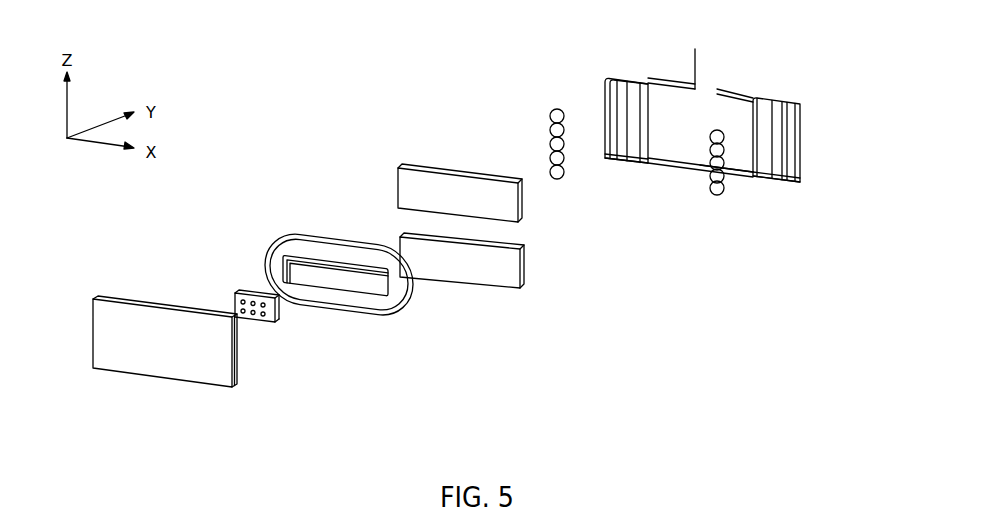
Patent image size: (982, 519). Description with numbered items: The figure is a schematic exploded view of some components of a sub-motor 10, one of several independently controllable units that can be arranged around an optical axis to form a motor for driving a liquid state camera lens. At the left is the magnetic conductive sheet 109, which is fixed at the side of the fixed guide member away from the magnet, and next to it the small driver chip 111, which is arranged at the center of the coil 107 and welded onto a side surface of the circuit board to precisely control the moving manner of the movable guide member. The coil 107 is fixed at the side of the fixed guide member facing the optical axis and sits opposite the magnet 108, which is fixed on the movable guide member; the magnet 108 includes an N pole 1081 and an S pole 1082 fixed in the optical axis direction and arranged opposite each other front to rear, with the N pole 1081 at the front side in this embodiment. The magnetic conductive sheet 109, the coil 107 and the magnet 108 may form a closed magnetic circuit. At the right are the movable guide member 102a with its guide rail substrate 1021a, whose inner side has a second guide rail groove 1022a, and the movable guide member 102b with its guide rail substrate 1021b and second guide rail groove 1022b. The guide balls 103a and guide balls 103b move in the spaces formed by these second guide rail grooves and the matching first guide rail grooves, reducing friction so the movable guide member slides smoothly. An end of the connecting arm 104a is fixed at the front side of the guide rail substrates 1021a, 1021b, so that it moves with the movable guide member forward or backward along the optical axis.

The sub-motor 10 is at (291, 125).
The coil 107 is at (368, 316).
The magnet 108 is at (477, 253).
The N pole 1081 is at (408, 186).
The S pole 1082 is at (483, 272).
The magnetic conductive sheet 109 is at (169, 365).
The driver chip 111 is at (259, 328).
The movable guide member 102a is at (633, 68).
The movable guide member 102b is at (783, 90).
The guide rail substrate 1021a is at (663, 151).
The guide rail substrate 1021b is at (744, 163).
The second guide rail groove 1022a is at (610, 166).
The second guide rail groove 1022b is at (784, 189).
The guide balls 103a is at (540, 129).
The guide balls 103b is at (710, 203).
The connecting arm 104a is at (717, 52).